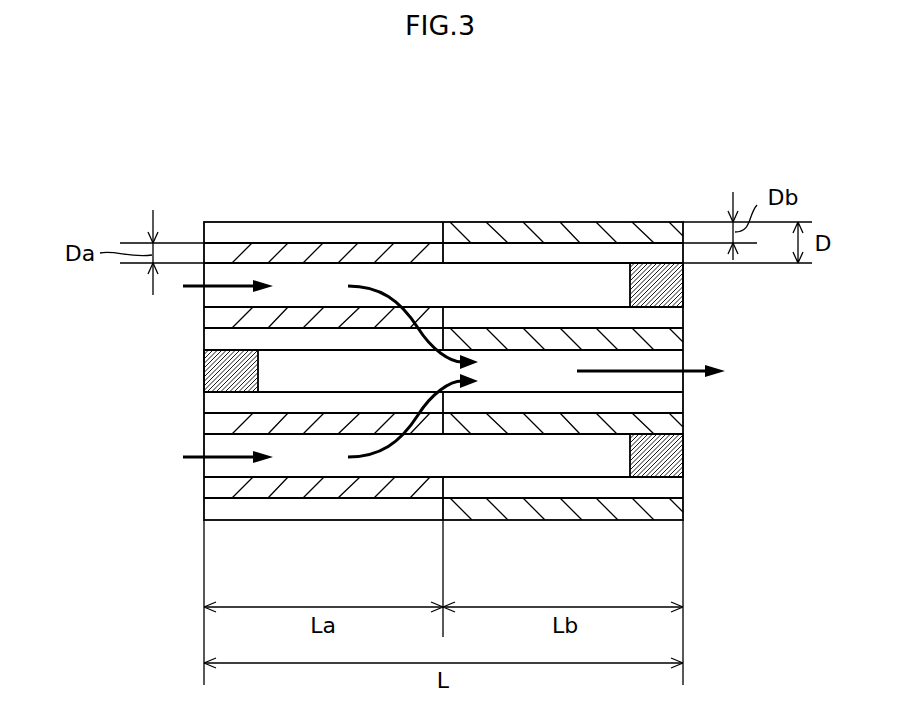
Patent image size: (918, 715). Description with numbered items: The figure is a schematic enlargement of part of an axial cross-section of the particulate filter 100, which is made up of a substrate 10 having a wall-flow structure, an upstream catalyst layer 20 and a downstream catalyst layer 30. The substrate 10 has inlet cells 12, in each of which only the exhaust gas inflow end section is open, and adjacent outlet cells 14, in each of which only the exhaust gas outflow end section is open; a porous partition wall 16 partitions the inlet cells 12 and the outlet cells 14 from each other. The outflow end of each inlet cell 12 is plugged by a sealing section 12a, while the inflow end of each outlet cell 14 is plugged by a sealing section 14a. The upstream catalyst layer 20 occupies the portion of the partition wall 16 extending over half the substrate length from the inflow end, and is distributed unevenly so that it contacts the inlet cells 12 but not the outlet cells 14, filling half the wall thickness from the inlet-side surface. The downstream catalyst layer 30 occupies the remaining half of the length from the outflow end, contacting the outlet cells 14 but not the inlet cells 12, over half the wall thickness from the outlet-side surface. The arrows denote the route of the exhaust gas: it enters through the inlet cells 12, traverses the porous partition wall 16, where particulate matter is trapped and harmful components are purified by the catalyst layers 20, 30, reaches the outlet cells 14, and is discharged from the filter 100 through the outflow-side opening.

The particulate filter 100 is at (705, 127).
The substrate 10 is at (537, 220).
The inlet cell 12 is at (397, 285).
The sealing section 12a is at (683, 290).
The outlet cell 14 is at (543, 377).
The sealing section 14a is at (204, 365).
The partition wall 16 is at (478, 306).
The upstream catalyst layer 20 is at (232, 250).
The downstream catalyst layer 30 is at (652, 232).